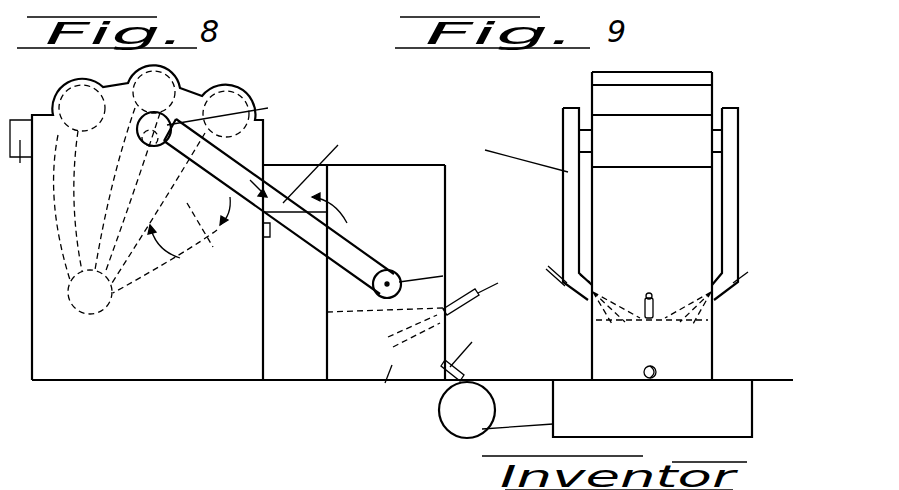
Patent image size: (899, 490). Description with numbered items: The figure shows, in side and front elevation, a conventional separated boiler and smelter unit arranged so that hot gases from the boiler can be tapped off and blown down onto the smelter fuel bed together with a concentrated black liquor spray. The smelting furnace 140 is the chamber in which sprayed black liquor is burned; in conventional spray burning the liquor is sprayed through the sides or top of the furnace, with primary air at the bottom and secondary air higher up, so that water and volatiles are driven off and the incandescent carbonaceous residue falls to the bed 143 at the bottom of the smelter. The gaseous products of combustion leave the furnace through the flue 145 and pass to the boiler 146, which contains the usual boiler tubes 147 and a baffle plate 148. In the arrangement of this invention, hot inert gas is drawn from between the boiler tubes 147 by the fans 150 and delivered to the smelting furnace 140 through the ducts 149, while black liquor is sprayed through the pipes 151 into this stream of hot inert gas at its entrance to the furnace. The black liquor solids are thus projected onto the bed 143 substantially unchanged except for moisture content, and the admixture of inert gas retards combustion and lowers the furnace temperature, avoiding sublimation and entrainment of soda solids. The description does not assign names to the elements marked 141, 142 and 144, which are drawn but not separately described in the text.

In FIG. 8, the smelting furnace 140 is at (480, 205).
In FIG. 9, the smelting furnace 140 is at (713, 352).
In FIG. 8, the black liquor feed / primary air nozzle 141 is at (467, 300).
In FIG. 9, the black liquor feed / primary air nozzle 141 is at (653, 297).
In FIG. 8, the smelt spout 142 is at (500, 363).
In FIG. 9, the smelt spout 142 is at (653, 382).
In FIG. 8, the bed 143 is at (385, 363).
In FIG. 9, the bed 143 is at (592, 368).
In FIG. 8, the dissolver tank 144 is at (550, 408).
In FIG. 8, the flue 145 is at (292, 180).
In FIG. 8, the boiler 146 is at (193, 343).
In FIG. 9, the boiler 146 is at (703, 103).
In FIG. 8, the boiler tubes 147 is at (147, 267).
In FIG. 8, the baffle plate 148 is at (222, 234).
In FIG. 8, the ducts 149 is at (305, 233).
In FIG. 9, the ducts 149 is at (567, 207).
In FIG. 8, the fans 150 is at (180, 118).
In FIG. 9, the fans 150 is at (580, 130).
In FIG. 9, the pipes 151 is at (552, 265).